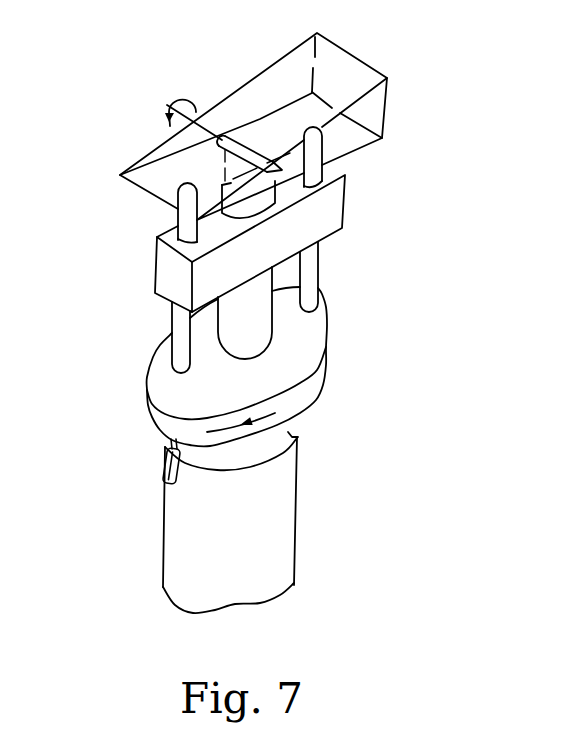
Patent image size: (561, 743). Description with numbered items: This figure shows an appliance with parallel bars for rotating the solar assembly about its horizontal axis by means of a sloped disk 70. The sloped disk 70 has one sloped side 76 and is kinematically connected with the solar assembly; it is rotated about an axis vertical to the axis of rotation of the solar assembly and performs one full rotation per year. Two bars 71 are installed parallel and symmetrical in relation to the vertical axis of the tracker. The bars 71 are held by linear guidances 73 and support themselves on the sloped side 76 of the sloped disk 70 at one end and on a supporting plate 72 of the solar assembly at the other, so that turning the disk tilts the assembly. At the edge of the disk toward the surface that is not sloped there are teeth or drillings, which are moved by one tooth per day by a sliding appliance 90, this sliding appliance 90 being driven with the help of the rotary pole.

The sloped disk 70 is at (317, 378).
The bars 71 is at (172, 322).
The supporting plate 72 is at (157, 187).
The linear guidances 73 is at (337, 194).
The sloped side 76 is at (185, 397).
The sliding appliance 90 is at (163, 467).